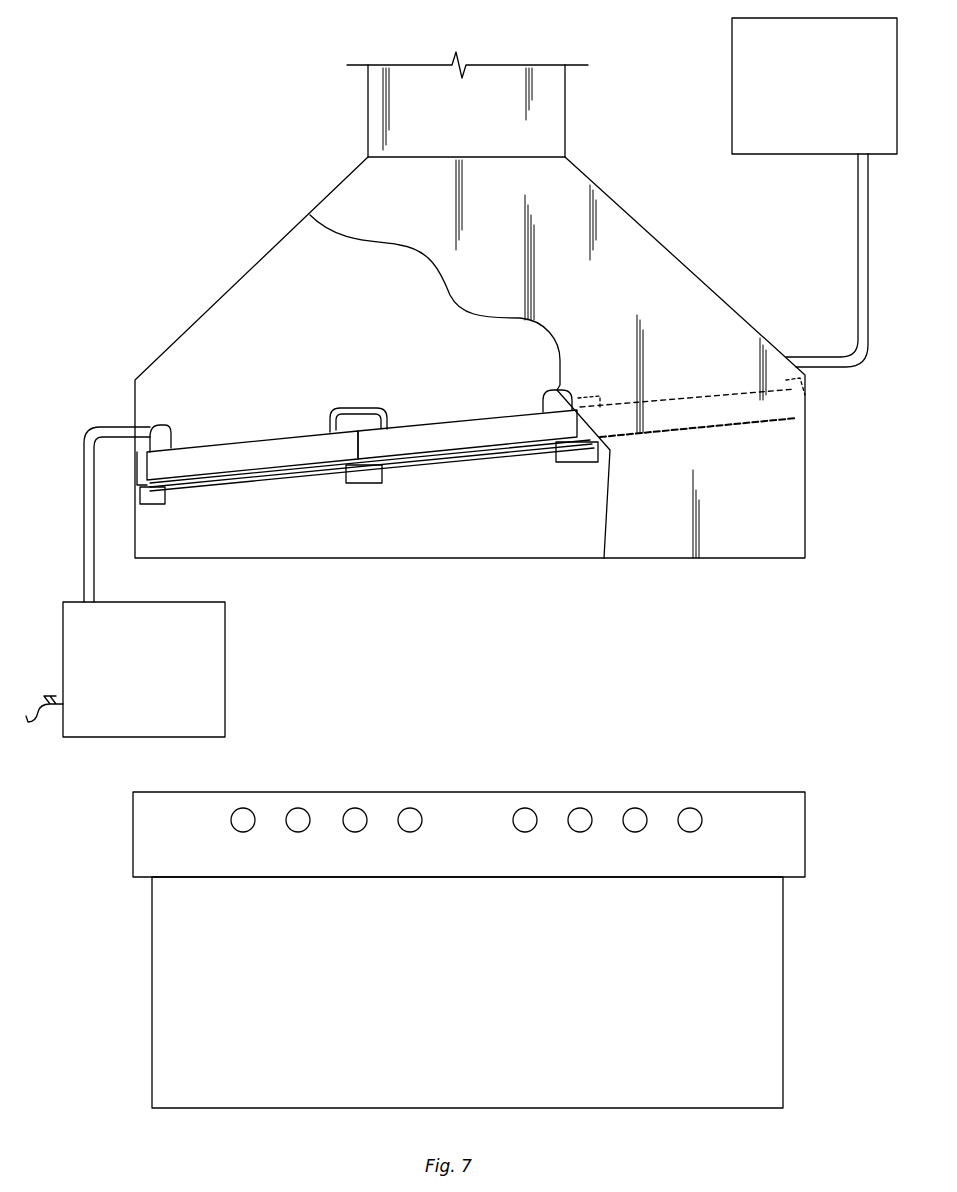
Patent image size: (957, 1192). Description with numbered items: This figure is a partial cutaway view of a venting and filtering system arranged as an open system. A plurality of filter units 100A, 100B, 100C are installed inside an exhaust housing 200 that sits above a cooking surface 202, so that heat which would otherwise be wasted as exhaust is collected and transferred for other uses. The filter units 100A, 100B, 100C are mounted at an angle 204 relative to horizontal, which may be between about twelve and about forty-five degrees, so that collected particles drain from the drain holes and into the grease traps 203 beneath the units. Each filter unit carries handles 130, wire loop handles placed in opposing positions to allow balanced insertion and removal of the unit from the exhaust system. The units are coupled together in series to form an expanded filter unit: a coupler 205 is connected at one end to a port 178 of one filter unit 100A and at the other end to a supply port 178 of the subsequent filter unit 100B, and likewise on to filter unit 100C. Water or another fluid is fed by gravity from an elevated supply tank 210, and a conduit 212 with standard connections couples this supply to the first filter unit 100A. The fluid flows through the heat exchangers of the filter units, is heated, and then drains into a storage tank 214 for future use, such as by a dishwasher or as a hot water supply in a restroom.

The exhaust housing 200 is at (561, 289).
The elevated supply tank 210 is at (800, 97).
The conduit 212 is at (858, 268).
The storage tank 214 is at (128, 679).
The cooking surface 202 is at (547, 792).
The angle 204 is at (518, 543).
The first filter unit 100A is at (700, 402).
The subsequent filter unit 100B is at (465, 430).
The filter unit 100C is at (235, 455).
The handle 130 is at (247, 487).
The fluid port 178 is at (163, 443).
The grease trap 203 is at (153, 493).
The coupler 205 is at (357, 407).